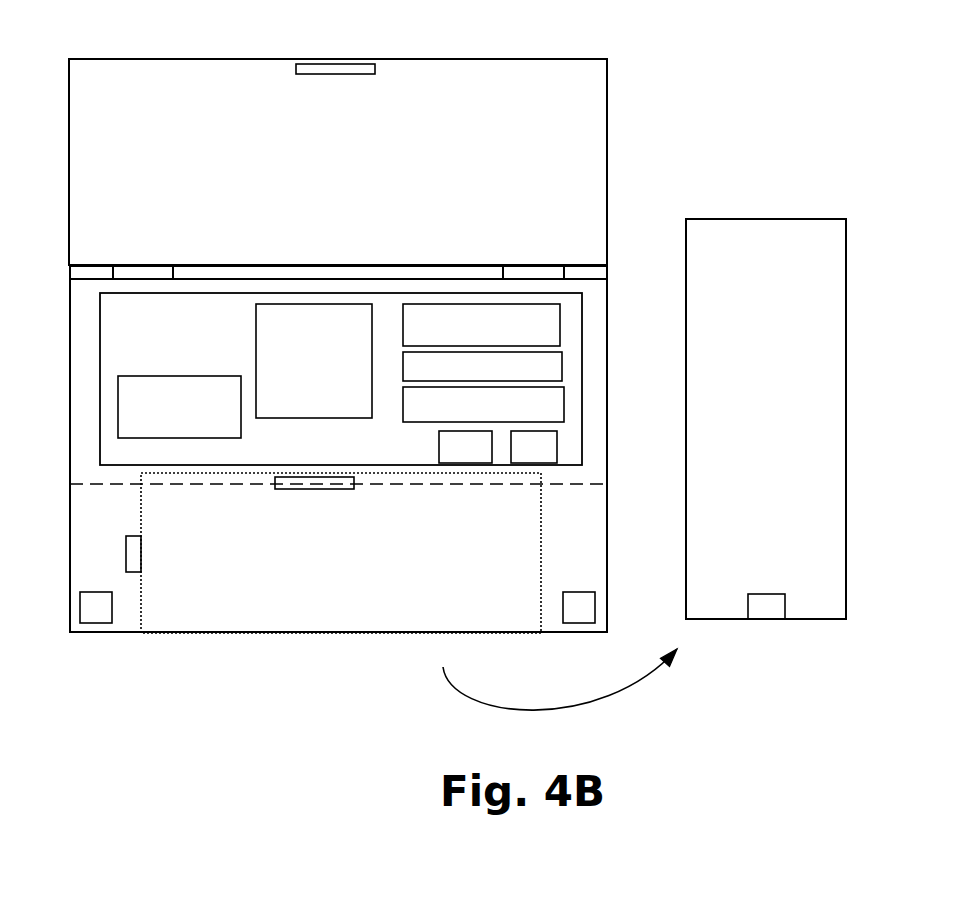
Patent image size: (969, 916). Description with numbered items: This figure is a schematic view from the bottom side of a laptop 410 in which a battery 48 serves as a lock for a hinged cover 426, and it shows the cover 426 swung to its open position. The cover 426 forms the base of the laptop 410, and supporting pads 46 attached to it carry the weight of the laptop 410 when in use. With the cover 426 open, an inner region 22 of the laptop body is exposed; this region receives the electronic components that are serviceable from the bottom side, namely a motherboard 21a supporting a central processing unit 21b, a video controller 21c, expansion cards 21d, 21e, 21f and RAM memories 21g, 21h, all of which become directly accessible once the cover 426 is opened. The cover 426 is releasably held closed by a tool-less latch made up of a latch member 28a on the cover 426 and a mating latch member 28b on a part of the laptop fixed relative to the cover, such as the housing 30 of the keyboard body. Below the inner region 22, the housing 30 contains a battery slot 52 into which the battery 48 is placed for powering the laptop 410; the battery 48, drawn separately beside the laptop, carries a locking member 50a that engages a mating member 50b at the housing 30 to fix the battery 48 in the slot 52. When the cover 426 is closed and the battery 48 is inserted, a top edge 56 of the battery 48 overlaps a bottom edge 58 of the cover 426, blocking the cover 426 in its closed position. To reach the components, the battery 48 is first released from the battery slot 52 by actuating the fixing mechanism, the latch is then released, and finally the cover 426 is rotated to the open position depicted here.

The laptop 410 is at (372, 327).
The cover 426 is at (157, 127).
The bottom edge of cover 58 is at (540, 62).
The latch member 28a is at (310, 66).
The inner region 22 is at (601, 336).
The motherboard 21a is at (153, 317).
The central processing unit 21b is at (165, 404).
The video controller 21c is at (302, 332).
The expansion card 21d is at (447, 337).
The expansion card 21e is at (447, 377).
The expansion card 21f is at (442, 412).
The RAM memory 21g is at (484, 456).
The RAM memory 21h is at (553, 455).
The latch member 28b is at (299, 480).
The housing 30 is at (90, 567).
The mating member 50b is at (129, 547).
The supporting pads 46 is at (108, 614).
The battery slot 52 is at (523, 612).
The battery 48 is at (827, 256).
The top edge of battery 56 is at (687, 390).
The locking member 50a is at (757, 597).